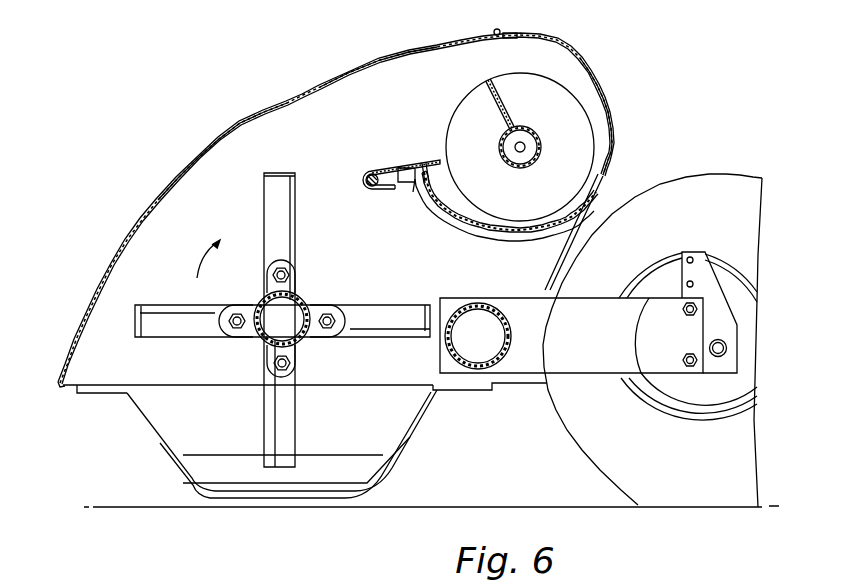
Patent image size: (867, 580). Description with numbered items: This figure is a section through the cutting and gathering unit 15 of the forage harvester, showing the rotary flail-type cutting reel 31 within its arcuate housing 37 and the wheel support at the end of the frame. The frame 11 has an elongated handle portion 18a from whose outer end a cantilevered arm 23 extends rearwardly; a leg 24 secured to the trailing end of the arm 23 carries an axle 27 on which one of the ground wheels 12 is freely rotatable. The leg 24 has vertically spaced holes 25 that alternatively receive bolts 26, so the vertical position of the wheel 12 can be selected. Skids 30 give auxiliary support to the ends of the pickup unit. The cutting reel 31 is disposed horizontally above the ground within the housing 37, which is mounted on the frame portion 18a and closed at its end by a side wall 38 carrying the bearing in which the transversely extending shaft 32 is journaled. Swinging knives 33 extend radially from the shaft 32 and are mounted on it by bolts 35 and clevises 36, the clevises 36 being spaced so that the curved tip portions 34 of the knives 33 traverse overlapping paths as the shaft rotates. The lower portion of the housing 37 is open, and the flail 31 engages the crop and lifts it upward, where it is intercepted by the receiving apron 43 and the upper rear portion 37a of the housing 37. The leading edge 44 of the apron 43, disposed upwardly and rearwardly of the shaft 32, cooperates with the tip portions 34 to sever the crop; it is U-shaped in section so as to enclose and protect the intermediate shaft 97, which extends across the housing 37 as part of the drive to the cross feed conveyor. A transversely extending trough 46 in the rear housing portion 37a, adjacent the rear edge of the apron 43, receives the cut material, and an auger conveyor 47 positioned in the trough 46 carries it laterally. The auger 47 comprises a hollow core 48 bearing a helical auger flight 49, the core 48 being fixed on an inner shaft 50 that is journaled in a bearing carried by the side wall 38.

The frame 11 is at (535, 391).
The ground wheels 12 is at (699, 178).
The cutting and gathering unit 15 is at (155, 197).
The handle portion 18a is at (478, 303).
The cantilevered arm 23 is at (604, 368).
The leg 24 is at (711, 283).
The holes 25 is at (686, 284).
The bolts 26 is at (685, 358).
The axle 27 is at (715, 357).
The skids 30 is at (392, 470).
The rotary flail-type cutting reel 31 is at (154, 250).
The shaft 32 is at (262, 300).
The swinging knives 33 is at (287, 243).
The tip portions 34 is at (137, 305).
The bolts 35 is at (324, 316).
The clevises 36 is at (267, 353).
The arcuate housing 37 is at (281, 105).
The upper rear portion of the housing 37a is at (587, 62).
The side wall 38 is at (378, 78).
The receiving apron 43 is at (413, 165).
The leading edge 44 is at (362, 180).
The trough 46 is at (517, 233).
The auger conveyor 47 is at (590, 103).
The hollow core 48 is at (520, 168).
The helical auger flight 49 is at (533, 82).
The inner shaft 50 is at (524, 153).
The intermediate shaft 97 is at (372, 195).